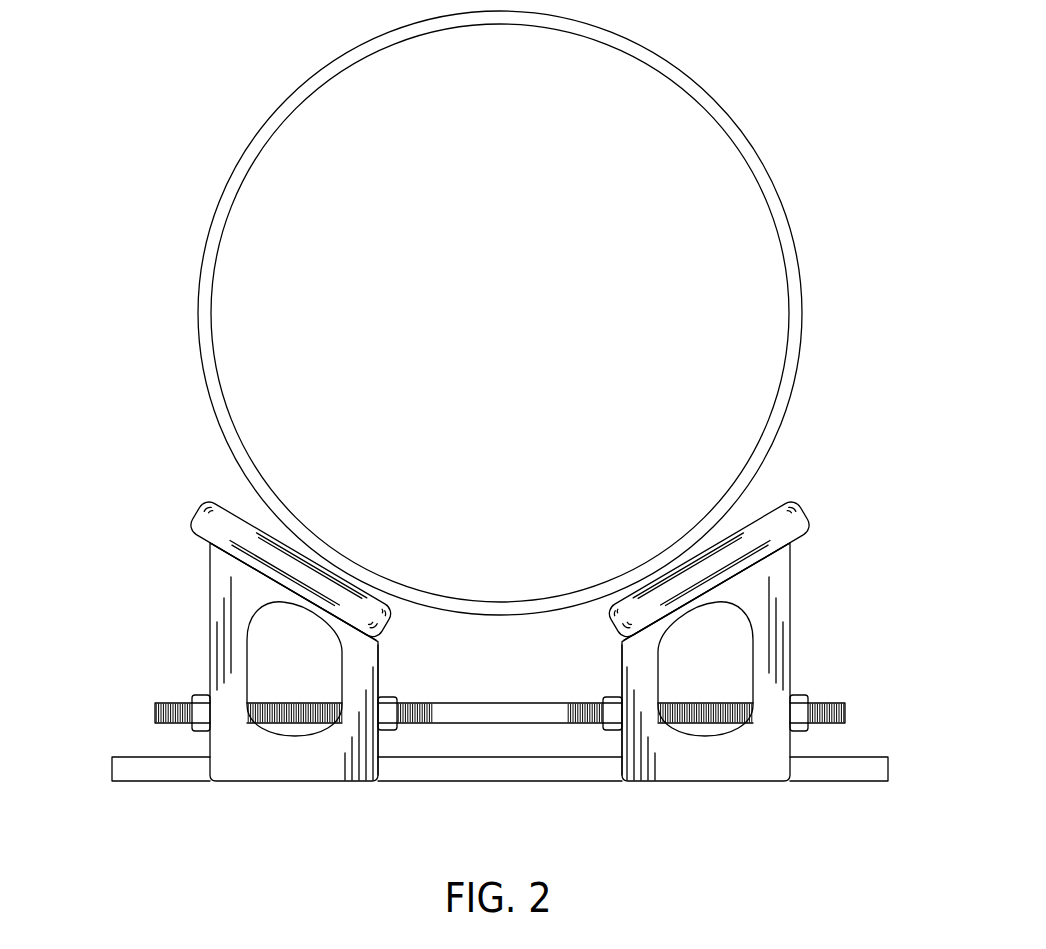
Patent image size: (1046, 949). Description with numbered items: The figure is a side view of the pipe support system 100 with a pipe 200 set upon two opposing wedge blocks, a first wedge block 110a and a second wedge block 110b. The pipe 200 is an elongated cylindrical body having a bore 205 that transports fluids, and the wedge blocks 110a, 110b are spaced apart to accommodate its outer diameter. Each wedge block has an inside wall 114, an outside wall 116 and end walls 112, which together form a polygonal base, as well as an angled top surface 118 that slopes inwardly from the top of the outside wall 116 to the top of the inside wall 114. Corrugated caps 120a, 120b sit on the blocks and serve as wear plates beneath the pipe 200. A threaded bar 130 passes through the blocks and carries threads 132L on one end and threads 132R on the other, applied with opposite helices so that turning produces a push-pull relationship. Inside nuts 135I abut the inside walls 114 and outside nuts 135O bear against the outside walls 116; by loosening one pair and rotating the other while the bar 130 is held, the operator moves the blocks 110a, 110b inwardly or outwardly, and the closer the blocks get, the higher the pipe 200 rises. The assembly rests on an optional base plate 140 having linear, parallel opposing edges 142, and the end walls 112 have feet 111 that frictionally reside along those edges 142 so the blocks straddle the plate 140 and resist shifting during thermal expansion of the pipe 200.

The pipe support system 100 is at (84, 497).
The first wedge block 110a is at (210, 592).
The second wedge block 110b is at (790, 592).
The feet 111 is at (243, 770).
The end walls 112 is at (352, 757).
The inside wall 114 is at (378, 676).
The outside wall 116 is at (210, 657).
The angled top surface 118 is at (215, 543).
The corrugated cap 120a is at (194, 503).
The corrugated cap 120b is at (806, 503).
The threaded bar 130 is at (505, 703).
The threads 132L is at (168, 703).
The threads 132R is at (832, 703).
The inside nuts 135I is at (387, 733).
The outside nuts 135O is at (200, 732).
The base plate 140 is at (498, 770).
The opposing edges 142 is at (112, 766).
The pipe 200 is at (803, 313).
The bore 205 is at (492, 321).